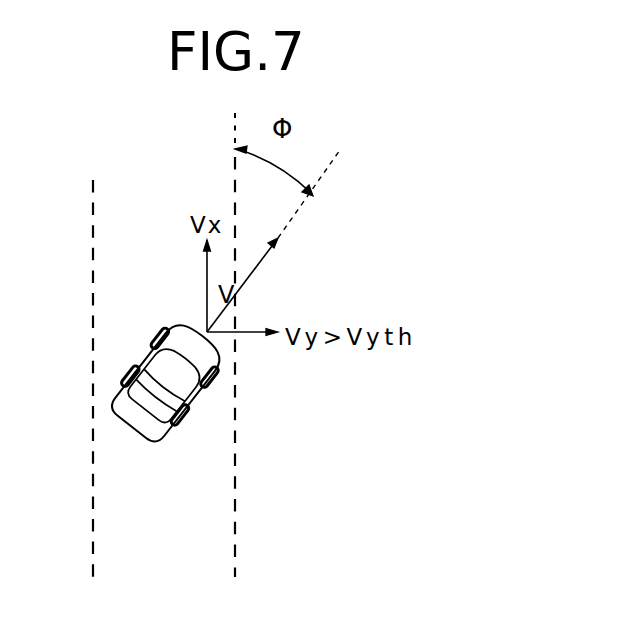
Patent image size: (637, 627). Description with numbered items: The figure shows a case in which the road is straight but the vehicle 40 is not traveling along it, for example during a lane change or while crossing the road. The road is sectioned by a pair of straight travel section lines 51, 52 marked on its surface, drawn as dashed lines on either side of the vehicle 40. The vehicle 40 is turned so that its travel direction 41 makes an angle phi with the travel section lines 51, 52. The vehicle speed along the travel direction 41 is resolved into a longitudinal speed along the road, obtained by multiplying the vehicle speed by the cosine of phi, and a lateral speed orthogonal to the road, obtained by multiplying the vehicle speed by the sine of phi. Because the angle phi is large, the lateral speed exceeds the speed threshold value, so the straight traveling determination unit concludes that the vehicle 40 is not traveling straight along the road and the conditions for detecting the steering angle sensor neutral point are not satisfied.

The vehicle 40 is at (155, 443).
The travel direction 41 is at (247, 287).
The travel section line 51 is at (92, 233).
The travel section line 52 is at (236, 481).